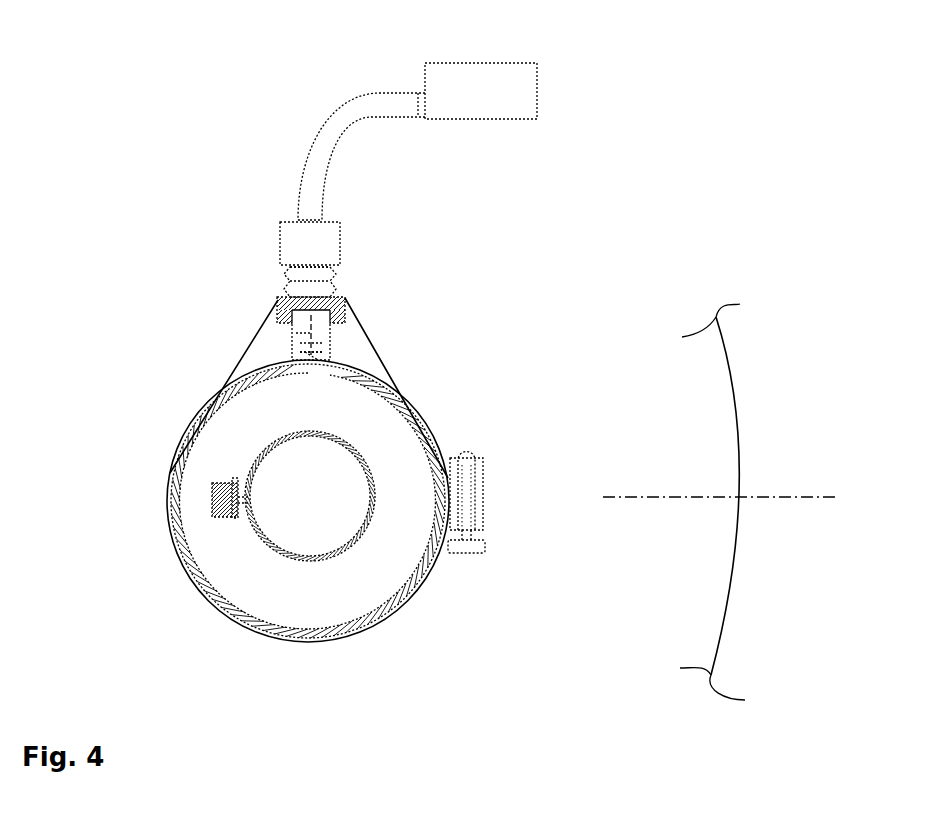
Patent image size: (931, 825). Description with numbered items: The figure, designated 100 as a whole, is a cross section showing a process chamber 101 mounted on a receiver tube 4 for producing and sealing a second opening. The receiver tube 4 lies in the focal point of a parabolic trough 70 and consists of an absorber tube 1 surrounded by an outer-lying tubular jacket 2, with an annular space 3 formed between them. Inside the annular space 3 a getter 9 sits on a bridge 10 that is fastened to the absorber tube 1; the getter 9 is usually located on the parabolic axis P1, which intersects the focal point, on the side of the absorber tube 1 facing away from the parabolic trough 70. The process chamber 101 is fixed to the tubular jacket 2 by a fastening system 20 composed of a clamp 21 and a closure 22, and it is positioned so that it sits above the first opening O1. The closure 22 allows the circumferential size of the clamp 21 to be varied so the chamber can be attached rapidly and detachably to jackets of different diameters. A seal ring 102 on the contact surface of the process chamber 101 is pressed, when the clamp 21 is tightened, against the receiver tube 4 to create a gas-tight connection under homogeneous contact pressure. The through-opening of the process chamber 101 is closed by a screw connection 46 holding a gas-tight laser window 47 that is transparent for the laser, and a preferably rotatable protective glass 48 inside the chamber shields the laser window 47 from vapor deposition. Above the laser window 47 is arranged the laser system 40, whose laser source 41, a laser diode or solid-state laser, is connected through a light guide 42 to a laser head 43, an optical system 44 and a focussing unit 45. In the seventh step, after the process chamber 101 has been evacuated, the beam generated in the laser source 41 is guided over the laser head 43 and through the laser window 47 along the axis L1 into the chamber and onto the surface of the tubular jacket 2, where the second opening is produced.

The sensor assembly 100 is at (129, 84).
The absorber tube 1 is at (263, 452).
The tubular jacket 2 is at (205, 413).
The annular space 3 is at (215, 530).
The receiver tube 4 is at (194, 598).
The getter 9 is at (212, 495).
The bridge 10 is at (232, 478).
The fastening system 20 is at (494, 506).
The clamp 21 is at (427, 570).
The closure 22 is at (467, 473).
The laser system 40 is at (454, 131).
The laser source 41 is at (480, 106).
The light guide 42 is at (385, 105).
The laser head 43 is at (289, 212).
The optical system 44 is at (290, 235).
The focussing unit 45 is at (292, 280).
The screw connection 46 is at (374, 300).
The laser window 47 is at (345, 308).
The protective glass 48 is at (330, 345).
The process chamber 101 is at (293, 333).
The seal ring 102 is at (297, 353).
The axis L1 is at (300, 350).
The first opening O1 is at (310, 357).
The parabolic trough 70 is at (752, 370).
The parabolic axis P1 is at (794, 492).